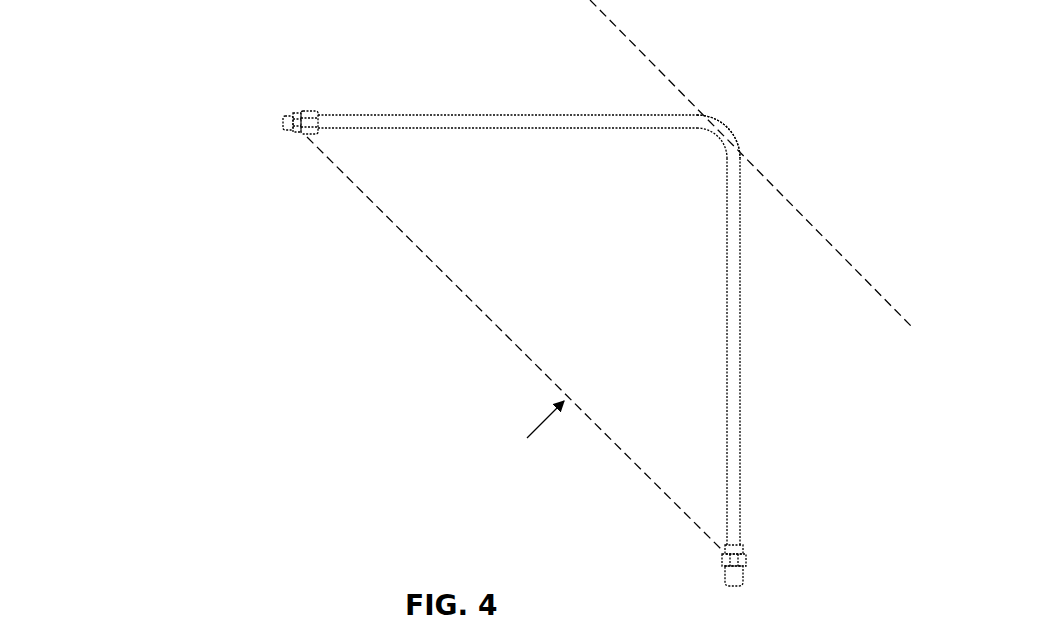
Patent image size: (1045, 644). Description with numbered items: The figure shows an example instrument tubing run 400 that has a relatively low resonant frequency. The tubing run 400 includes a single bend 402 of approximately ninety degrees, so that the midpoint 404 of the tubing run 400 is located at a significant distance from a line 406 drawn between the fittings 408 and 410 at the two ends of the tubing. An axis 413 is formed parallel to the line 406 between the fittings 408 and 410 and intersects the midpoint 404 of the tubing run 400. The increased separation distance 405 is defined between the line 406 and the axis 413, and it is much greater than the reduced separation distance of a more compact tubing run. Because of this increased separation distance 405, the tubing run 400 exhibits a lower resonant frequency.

The instrument tubing run 400 is at (204, 100).
The bend 402 is at (731, 130).
The midpoint 404 is at (704, 152).
The increased separation distance 405 is at (545, 423).
The line 406 is at (507, 338).
The fitting 408 is at (308, 110).
The fitting 410 is at (745, 558).
The axis 413 is at (792, 190).